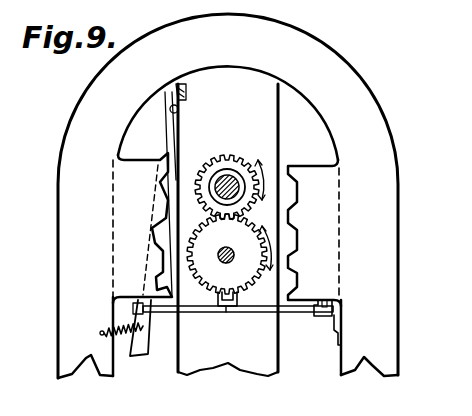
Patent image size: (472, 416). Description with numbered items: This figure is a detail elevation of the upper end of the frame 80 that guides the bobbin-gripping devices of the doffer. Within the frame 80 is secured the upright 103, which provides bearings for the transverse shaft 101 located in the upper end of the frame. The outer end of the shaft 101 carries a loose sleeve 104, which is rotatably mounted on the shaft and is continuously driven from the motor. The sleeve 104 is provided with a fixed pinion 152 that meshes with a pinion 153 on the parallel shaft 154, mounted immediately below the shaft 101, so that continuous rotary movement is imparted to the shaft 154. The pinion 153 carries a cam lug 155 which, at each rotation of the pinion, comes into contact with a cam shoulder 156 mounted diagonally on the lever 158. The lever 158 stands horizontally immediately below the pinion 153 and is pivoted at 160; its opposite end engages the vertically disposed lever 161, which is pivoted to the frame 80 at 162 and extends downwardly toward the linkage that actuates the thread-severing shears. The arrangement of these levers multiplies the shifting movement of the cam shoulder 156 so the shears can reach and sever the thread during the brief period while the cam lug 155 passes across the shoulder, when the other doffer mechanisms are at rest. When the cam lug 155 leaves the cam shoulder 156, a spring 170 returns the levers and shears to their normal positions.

The frame 80 is at (72, 260).
The transverse shaft 101 is at (210, 192).
The upright 103 is at (240, 384).
The loose sleeve 104 is at (216, 176).
The fixed pinion 152 is at (240, 163).
The pinion 153 is at (230, 254).
The parallel shaft 154 is at (225, 261).
The cam lug 155 is at (234, 302).
The cam shoulder 156 is at (222, 302).
The lever 158 is at (296, 313).
The pivot 160 is at (322, 308).
The vertically disposed lever 161 is at (170, 135).
The pivot 162 is at (170, 108).
The spring 170 is at (118, 330).